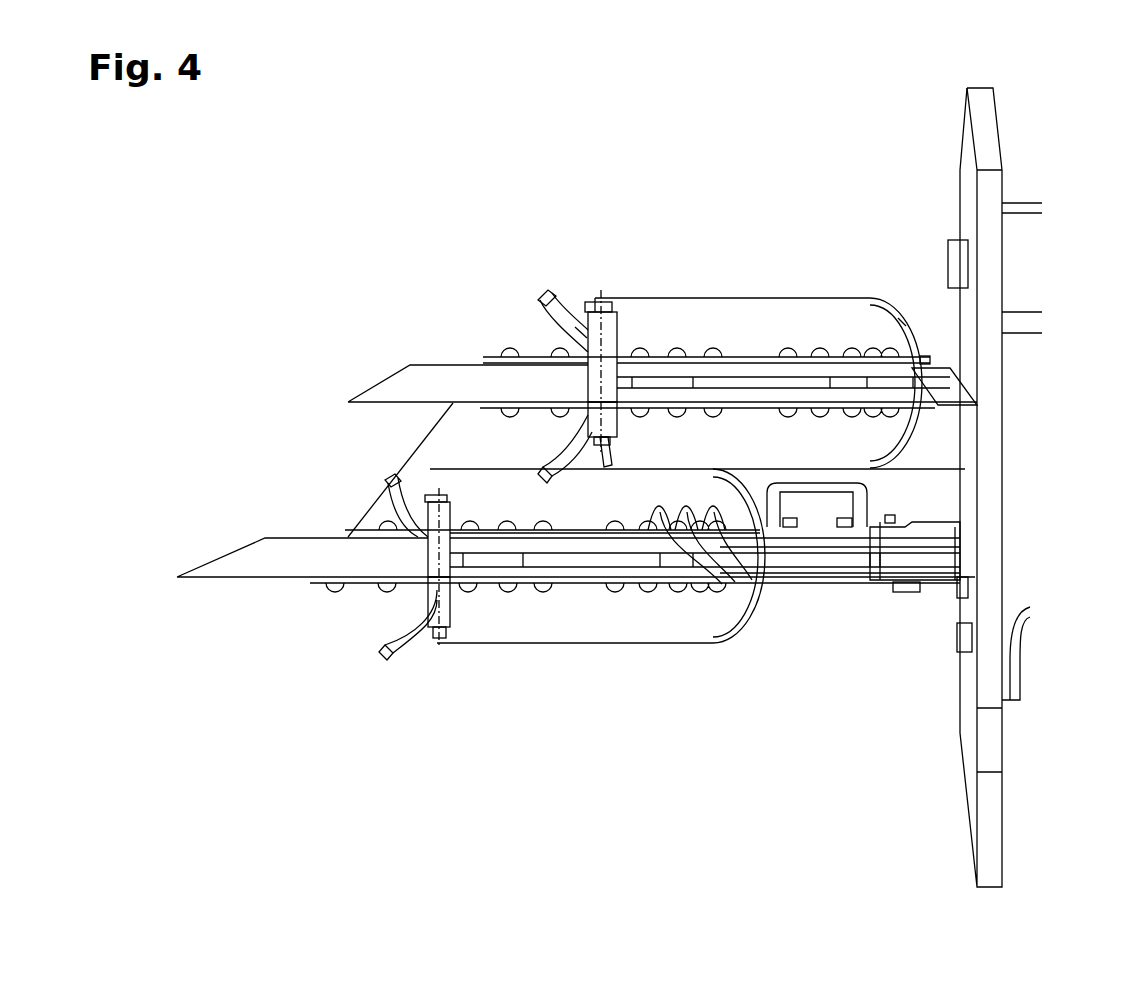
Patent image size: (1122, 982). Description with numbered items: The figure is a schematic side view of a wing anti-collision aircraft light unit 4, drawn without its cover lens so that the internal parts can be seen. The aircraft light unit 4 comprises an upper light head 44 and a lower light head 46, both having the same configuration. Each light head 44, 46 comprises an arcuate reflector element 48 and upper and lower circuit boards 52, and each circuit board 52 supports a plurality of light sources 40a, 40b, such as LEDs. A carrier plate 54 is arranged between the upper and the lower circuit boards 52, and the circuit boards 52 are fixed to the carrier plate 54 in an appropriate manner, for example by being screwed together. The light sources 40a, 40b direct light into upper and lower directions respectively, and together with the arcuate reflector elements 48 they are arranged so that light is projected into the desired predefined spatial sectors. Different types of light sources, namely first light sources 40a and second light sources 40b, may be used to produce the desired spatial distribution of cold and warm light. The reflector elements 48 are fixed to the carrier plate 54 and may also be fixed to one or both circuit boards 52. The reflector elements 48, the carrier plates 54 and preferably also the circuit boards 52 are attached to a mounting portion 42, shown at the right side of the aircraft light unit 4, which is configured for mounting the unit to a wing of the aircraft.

The aircraft light unit 4 is at (234, 327).
The first light sources 40a is at (843, 424).
The second light sources 40b is at (556, 348).
The mounting portion 42 is at (998, 398).
The upper light head 44 is at (678, 296).
The lower light head 46 is at (566, 650).
The arcuate reflector element 48 is at (552, 292).
The circuit boards 52 is at (757, 390).
The carrier plate 54 is at (784, 385).